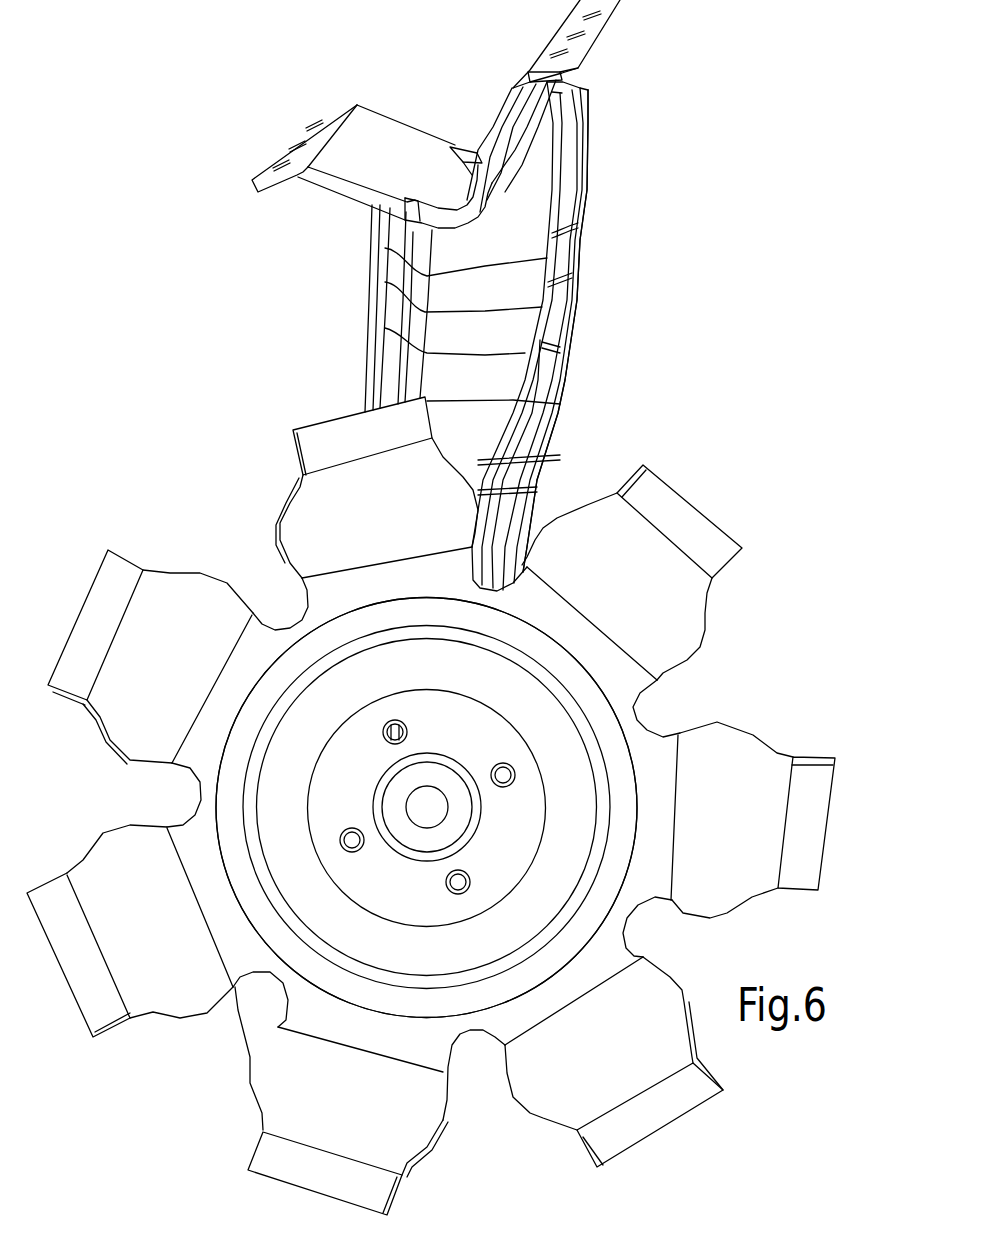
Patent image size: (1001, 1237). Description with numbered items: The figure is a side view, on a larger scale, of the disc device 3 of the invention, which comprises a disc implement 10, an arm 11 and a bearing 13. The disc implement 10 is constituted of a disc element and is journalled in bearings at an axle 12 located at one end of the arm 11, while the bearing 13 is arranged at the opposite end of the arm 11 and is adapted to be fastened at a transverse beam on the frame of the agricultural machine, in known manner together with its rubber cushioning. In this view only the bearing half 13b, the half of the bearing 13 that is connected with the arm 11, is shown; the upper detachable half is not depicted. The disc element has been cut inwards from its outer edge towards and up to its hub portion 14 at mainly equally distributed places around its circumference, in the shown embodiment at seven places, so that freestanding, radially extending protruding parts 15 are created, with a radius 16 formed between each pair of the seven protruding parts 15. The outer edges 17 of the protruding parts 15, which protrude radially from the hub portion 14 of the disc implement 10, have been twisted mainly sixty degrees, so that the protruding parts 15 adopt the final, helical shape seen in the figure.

The disc device 3 is at (683, 365).
The disc implement 10 is at (765, 607).
The arm 11 is at (553, 322).
The axle 12 is at (422, 822).
The bearing 13 is at (600, 63).
The bearing half 13b is at (340, 190).
The hub portion 14 is at (450, 958).
The protruding parts 15 is at (688, 633).
The radius 16 is at (667, 710).
The outer edges 17 is at (695, 507).